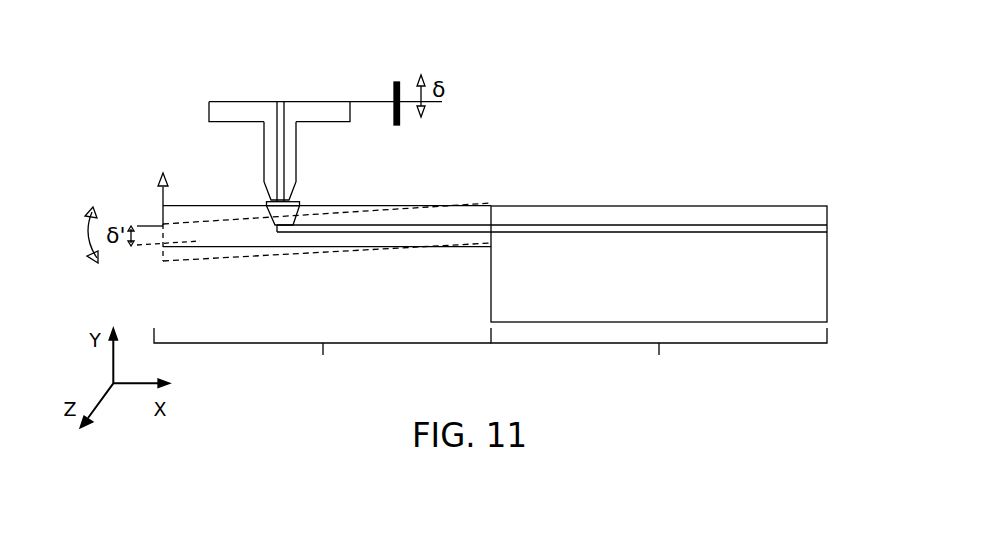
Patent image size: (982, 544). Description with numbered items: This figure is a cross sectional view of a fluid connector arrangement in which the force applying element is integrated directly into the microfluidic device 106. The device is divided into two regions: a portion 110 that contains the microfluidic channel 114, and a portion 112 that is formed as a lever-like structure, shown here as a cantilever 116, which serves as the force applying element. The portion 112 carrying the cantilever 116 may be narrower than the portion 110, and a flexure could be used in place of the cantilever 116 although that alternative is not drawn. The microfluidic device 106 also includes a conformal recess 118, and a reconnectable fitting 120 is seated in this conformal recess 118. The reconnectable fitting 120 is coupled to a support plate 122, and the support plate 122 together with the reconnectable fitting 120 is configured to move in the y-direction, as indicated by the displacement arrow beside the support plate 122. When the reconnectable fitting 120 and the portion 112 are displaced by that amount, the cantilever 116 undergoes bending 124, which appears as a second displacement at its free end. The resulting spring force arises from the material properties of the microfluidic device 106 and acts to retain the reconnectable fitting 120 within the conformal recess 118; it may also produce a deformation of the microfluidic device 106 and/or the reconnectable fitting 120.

The microfluidic device 106 is at (438, 227).
The portion of the microfluidic device 110 is at (659, 297).
The portion of the microfluidic device 112 is at (322, 358).
The microfluidic channel 114 is at (588, 233).
The cantilever 116 is at (246, 247).
The conformal recess 118 is at (296, 220).
The reconnectable fitting 120 is at (296, 150).
The support plate 122 is at (375, 102).
The bending 124 is at (87, 236).